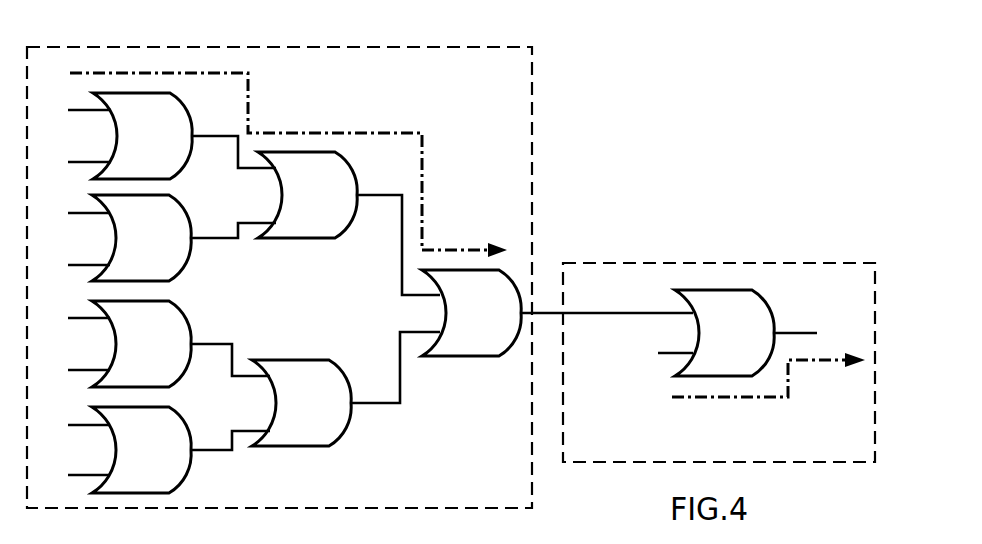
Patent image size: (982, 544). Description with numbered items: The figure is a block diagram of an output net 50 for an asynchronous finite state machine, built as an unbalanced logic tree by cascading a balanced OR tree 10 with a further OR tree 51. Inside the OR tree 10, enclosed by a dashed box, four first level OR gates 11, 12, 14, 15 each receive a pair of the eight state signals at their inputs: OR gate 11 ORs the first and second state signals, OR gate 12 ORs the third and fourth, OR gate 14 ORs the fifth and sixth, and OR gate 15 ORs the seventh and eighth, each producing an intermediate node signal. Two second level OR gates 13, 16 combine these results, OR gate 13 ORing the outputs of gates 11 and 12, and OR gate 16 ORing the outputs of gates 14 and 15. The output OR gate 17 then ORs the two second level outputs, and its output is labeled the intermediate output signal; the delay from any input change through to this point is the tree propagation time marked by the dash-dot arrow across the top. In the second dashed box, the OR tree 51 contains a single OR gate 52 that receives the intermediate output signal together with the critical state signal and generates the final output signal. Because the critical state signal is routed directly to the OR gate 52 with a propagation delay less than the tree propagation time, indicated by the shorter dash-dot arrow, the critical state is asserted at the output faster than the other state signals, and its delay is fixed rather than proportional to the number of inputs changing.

The OR tree 10 is at (500, 46).
The first level OR gate 11 is at (133, 148).
The first level OR gate 12 is at (132, 250).
The second level OR gate 13 is at (298, 207).
The first level OR gate 14 is at (132, 356).
The first level OR gate 15 is at (132, 462).
The second level OR gate 16 is at (292, 415).
The output OR gate 17 is at (462, 325).
The output net 50 is at (722, 101).
The OR tree 51 is at (813, 263).
The OR gate 52 is at (715, 345).